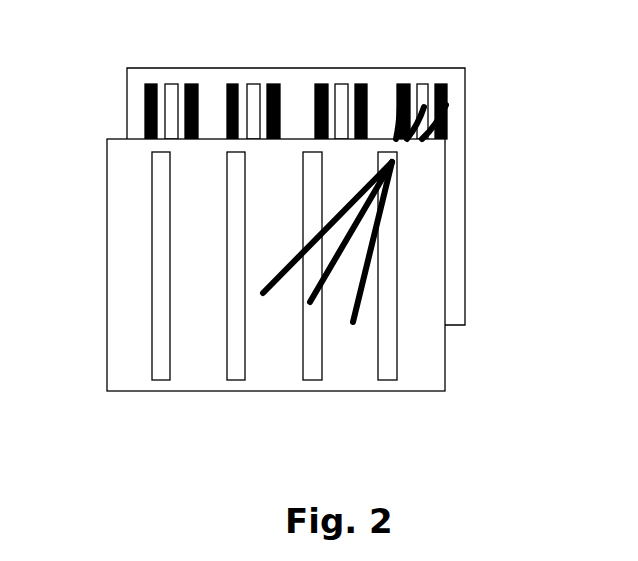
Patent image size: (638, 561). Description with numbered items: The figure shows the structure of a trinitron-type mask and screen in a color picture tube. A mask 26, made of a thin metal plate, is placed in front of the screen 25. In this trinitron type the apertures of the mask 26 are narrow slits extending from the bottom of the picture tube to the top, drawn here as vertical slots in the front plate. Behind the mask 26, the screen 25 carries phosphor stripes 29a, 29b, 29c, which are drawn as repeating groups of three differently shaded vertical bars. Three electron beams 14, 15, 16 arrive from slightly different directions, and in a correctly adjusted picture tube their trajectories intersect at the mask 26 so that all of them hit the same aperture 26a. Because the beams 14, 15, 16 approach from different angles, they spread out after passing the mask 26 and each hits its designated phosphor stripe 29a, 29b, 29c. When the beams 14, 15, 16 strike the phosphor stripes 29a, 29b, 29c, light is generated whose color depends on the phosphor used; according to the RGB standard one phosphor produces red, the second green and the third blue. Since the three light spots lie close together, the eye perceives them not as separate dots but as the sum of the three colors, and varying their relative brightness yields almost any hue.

The screen 25 is at (127, 88).
The mask 26 is at (120, 233).
The aperture 26a is at (390, 228).
The phosphor stripe 29a is at (402, 90).
The phosphor stripe 29b is at (422, 88).
The phosphor stripe 29c is at (443, 86).
The electron beam 14 is at (362, 300).
The electron beam 15 is at (285, 268).
The electron beam 16 is at (311, 297).